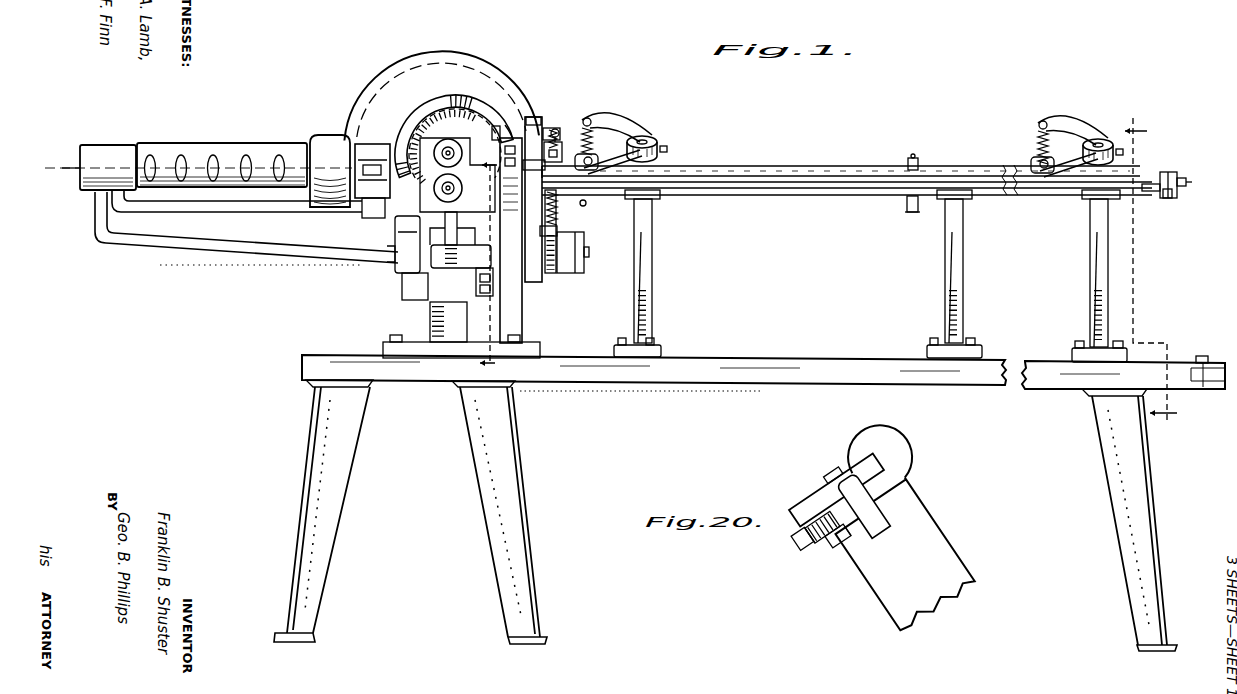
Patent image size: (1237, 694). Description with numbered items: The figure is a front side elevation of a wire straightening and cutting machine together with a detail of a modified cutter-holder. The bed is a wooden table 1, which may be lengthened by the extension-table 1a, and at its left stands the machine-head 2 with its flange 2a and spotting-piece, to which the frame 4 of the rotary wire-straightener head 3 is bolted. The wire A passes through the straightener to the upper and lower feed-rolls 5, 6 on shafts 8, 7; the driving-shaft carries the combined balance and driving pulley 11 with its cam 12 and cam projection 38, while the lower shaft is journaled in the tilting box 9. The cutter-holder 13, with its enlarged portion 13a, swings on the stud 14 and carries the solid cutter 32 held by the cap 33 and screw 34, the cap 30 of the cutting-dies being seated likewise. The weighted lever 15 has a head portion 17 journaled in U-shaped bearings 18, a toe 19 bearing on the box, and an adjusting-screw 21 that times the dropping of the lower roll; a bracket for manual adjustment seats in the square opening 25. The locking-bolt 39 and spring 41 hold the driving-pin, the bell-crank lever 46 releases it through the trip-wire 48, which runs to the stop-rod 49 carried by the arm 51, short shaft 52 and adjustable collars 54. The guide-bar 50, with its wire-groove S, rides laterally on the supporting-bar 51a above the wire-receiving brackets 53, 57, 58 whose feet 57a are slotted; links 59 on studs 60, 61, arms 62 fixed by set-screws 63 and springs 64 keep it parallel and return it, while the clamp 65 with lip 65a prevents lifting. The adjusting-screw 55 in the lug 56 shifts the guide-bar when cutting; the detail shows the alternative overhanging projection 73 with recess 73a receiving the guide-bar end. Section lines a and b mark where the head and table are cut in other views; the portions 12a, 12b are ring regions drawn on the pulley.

In FIG. 1, the table 1 is at (780, 359).
In FIG. 1, the extension-table 1a is at (1206, 357).
In FIG. 1, the machine-head 2 is at (449, 100).
In FIG. 1, the flange of the head 2a is at (523, 332).
In FIG. 1, the rotary wire-straightener head 3 is at (254, 145).
In FIG. 1, the frame of the wire-straightener 4 is at (372, 257).
In FIG. 1, the upper wire-feed roll 5 is at (450, 139).
In FIG. 1, the lower wire-feed roll 6 is at (436, 184).
In FIG. 1, the lower feed-roll shaft 7 is at (436, 193).
In FIG. 1, the driving-shaft 8 is at (437, 149).
In FIG. 1, the tilting box 9 is at (457, 175).
In FIG. 1, the combined balance and driving pulley 11 is at (388, 73).
In FIG. 1, the cam 12 is at (421, 105).
In FIG. 1, the ring portion 12a is at (411, 114).
In FIG. 1, the ring portion 12b is at (514, 93).
In FIG. 1, the cutter-holder 13 is at (556, 276).
In FIG. 20, the cutter-holder 13 is at (903, 556).
In FIG. 1, the enlarged portion of the cutter-holder 13a is at (533, 117).
In FIG. 20, the enlarged portion of the cutter-holder 13a is at (907, 443).
In FIG. 1, the stud 14 is at (587, 253).
In FIG. 1, the weighted lever 15 is at (448, 322).
In FIG. 1, the head portion of the weighted lever 17 is at (465, 268).
In FIG. 1, the U-shaped bearings 18 is at (408, 273).
In FIG. 1, the toe 19 is at (459, 224).
In FIG. 1, the adjusting-screw 21 is at (488, 296).
In FIG. 1, the square opening of the machine-head 25 is at (440, 272).
In FIG. 20, the cap of the cutting-dies 30 is at (798, 521).
In FIG. 20, the solid cutter 32 is at (840, 538).
In FIG. 1, the cap 33 is at (534, 185).
In FIG. 1, the screw 34 is at (550, 128).
In FIG. 20, the screw 34 is at (827, 478).
In FIG. 1, the projection of the cam 38 is at (504, 125).
In FIG. 1, the locking-bolt 39 is at (580, 204).
In FIG. 1, the spring 41 is at (558, 206).
In FIG. 1, the bell-crank lever 46 is at (578, 200).
In FIG. 1, the trip-wire 48 is at (713, 198).
In FIG. 1, the stop-rod 49 is at (1188, 181).
In FIG. 1, the guide-bar 50 is at (1009, 172).
In FIG. 20, the guide-bar 50 is at (820, 528).
In FIG. 1, the arm 51 is at (1170, 198).
In FIG. 1, the supporting-bar 51a is at (825, 190).
In FIG. 1, the short shaft 52 is at (1152, 193).
In FIG. 1, the rear wire-bracket 53 is at (1090, 268).
In FIG. 1, the adjustable collars 54 is at (1168, 172).
In FIG. 1, the adjusting-screw 55 is at (565, 150).
In FIG. 1, the lug 56 is at (556, 130).
In FIG. 1, the wire-receiving bracket 57 is at (652, 262).
In FIG. 1, the feet of the wire-receiving brackets 57a is at (637, 348).
In FIG. 1, the wire-receiving bracket 58 is at (945, 272).
In FIG. 1, the links 59 is at (612, 150).
In FIG. 1, the studs 60 is at (656, 137).
In FIG. 1, the studs 61 is at (592, 166).
In FIG. 1, the arms 62 is at (845, 126).
In FIG. 1, the set-screws 63 is at (669, 149).
In FIG. 1, the springs 64 is at (585, 130).
In FIG. 1, the clamp 65 is at (909, 210).
In FIG. 1, the overhanging lip 65a is at (919, 165).
In FIG. 20, the overhanging projection 73 is at (865, 516).
In FIG. 20, the recess 73a is at (806, 543).
In FIG. 1, the wire A is at (62, 161).
In FIG. 20, the wire-groove S is at (820, 543).
In FIG. 1, the section line a is at (488, 264).
In FIG. 1, the section line b is at (1151, 273).